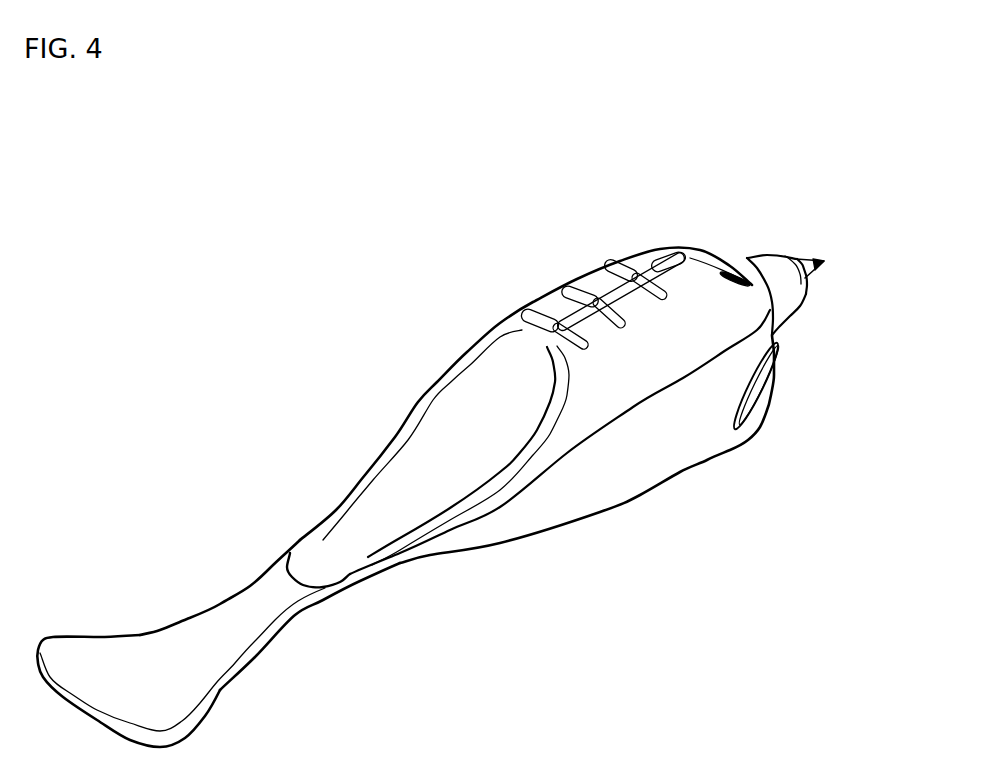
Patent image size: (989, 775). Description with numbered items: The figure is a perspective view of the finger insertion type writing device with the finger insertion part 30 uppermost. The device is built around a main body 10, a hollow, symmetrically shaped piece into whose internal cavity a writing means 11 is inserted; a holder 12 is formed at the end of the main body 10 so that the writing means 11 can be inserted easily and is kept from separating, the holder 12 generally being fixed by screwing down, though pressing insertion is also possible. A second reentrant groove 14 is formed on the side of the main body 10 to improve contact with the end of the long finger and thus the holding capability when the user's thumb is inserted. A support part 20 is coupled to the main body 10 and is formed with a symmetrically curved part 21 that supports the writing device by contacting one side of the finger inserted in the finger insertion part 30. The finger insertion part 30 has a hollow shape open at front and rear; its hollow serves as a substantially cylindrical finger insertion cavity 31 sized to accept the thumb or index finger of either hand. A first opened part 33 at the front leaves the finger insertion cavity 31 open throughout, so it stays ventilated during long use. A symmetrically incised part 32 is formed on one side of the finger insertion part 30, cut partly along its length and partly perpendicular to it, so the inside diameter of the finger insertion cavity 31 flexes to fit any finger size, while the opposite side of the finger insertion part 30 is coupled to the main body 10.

The main body 10 is at (638, 468).
The writing means 11 is at (818, 262).
The holder 12 is at (773, 275).
The second reentrant groove 14 is at (756, 387).
The support part 20 is at (120, 670).
The symmetrically curved part 21 is at (298, 608).
The finger insertion part 30 is at (507, 327).
The finger insertion cavity 31 is at (467, 445).
The symmetrically incised part 32 is at (598, 300).
The first opened part 33 is at (713, 263).